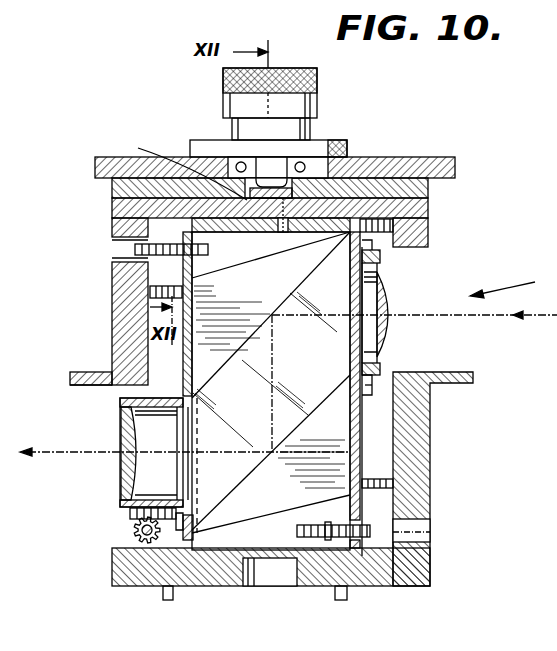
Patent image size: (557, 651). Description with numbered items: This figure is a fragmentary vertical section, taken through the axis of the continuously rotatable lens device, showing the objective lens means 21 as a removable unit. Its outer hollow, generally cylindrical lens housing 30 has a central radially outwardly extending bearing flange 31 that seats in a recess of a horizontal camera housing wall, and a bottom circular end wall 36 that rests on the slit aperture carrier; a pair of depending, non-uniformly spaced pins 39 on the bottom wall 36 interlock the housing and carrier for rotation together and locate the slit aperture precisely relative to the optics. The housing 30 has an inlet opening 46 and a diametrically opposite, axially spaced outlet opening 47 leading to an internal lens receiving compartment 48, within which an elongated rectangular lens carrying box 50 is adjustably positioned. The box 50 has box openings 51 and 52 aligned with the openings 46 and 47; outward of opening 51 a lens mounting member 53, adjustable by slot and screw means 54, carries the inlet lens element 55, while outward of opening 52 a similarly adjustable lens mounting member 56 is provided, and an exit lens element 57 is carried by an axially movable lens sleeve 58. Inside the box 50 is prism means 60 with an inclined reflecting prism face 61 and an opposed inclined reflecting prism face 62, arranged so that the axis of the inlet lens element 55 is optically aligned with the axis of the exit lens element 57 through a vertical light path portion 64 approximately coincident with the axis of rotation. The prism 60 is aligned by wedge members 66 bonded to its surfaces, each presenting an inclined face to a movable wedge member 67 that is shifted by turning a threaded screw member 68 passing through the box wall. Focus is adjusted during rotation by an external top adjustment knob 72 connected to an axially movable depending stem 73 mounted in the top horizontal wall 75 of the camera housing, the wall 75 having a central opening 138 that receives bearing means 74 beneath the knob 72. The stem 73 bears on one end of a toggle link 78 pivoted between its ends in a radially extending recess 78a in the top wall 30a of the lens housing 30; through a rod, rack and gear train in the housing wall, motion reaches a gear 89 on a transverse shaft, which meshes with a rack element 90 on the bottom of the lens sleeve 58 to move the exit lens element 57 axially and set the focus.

The objective lens means 21 is at (513, 286).
The lens housing 30 is at (102, 290).
The top wall 30a is at (420, 192).
The bearing flange 31 is at (72, 372).
The bottom circular end wall 36 is at (218, 580).
The pins 39 is at (163, 599).
The inlet opening 46 is at (420, 248).
The outlet opening 47 is at (80, 387).
The lens receiving compartment 48 is at (420, 465).
The lens carrying box 50 is at (420, 437).
The box opening 51 is at (358, 360).
The box opening 52 is at (182, 428).
The lens mounting member 53 is at (372, 251).
The slot and screw means 54 is at (368, 388).
The inlet lens element 55 is at (389, 298).
The lens mounting member 56 is at (182, 393).
The exit lens element 57 is at (125, 468).
The lens sleeve 58 is at (133, 505).
The prism means 60 is at (288, 391).
The inclined reflecting prism face 61 is at (300, 283).
The inclined reflecting prism face 62 is at (291, 430).
The optical axis of light path portion 64 is at (272, 392).
The wedge members 66 is at (269, 389).
The wedge member 67 is at (271, 379).
The threaded screw member 68 is at (135, 250).
The top adjustment knob 72 is at (316, 83).
The stem 73 is at (272, 168).
The bearing means 74 is at (312, 162).
The top horizontal wall 75 is at (440, 160).
The toggle link 78 is at (286, 236).
The radially extending recess 78a is at (181, 161).
The gear 89 is at (132, 537).
The rack element 90 is at (130, 512).
The central opening 138 is at (345, 157).